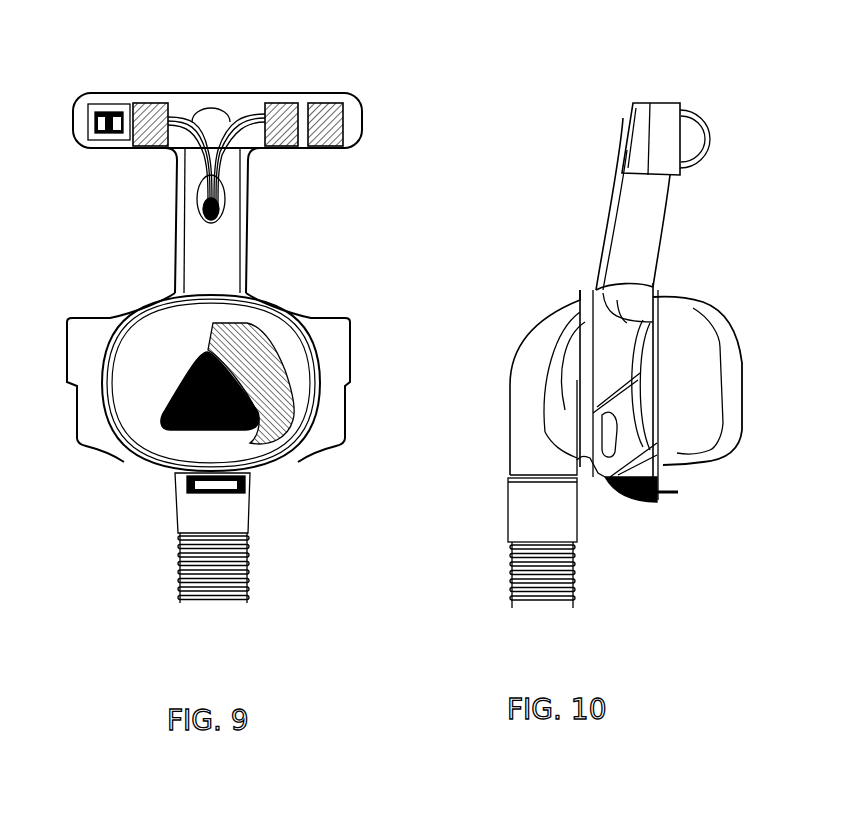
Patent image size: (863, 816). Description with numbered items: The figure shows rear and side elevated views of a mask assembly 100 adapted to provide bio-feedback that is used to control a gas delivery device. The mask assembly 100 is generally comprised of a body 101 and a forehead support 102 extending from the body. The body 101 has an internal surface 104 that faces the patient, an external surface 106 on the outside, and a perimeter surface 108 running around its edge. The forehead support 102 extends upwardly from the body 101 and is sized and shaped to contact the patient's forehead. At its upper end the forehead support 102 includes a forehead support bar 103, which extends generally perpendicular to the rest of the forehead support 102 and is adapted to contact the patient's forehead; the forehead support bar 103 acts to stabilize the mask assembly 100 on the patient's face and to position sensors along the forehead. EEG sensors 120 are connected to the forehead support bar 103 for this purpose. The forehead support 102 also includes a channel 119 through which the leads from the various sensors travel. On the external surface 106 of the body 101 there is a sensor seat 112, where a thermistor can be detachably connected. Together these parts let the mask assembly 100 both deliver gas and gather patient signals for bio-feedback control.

In FIG. 9, the mask assembly 100 is at (229, 321).
In FIG. 10, the mask assembly 100 is at (628, 324).
In FIG. 9, the body 101 is at (277, 303).
In FIG. 10, the body 101 is at (569, 334).
In FIG. 9, the forehead support 102 is at (178, 248).
In FIG. 10, the forehead support 102 is at (600, 237).
In FIG. 9, the forehead support bar 103 is at (220, 96).
In FIG. 10, the forehead support bar 103 is at (665, 103).
In FIG. 9, the internal surface 104 is at (160, 427).
In FIG. 10, the external surface 106 is at (540, 405).
In FIG. 10, the perimeter surface 108 is at (663, 403).
In FIG. 10, the sensor seat 112 is at (660, 472).
In FIG. 9, the channel 119 is at (202, 198).
In FIG. 9, the EEG sensors 120 is at (143, 102).